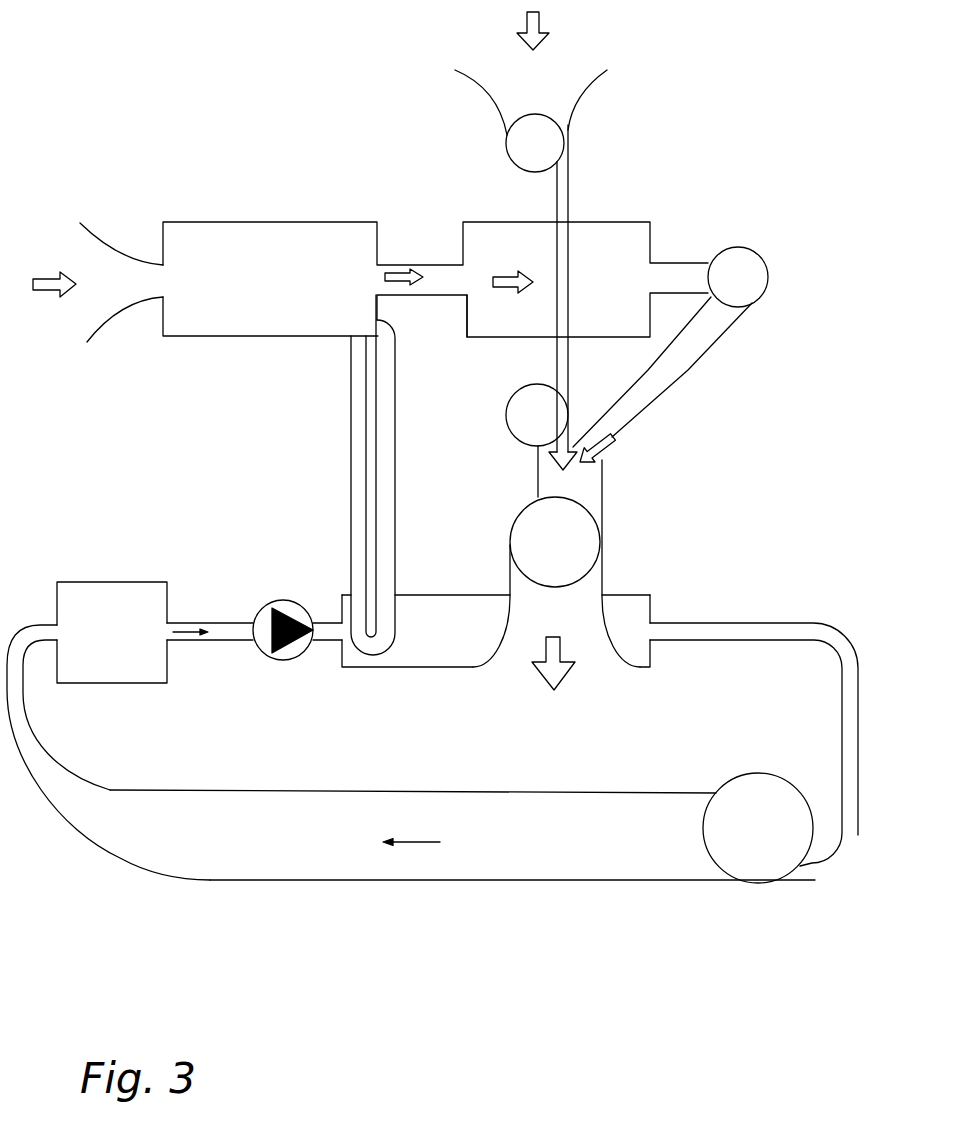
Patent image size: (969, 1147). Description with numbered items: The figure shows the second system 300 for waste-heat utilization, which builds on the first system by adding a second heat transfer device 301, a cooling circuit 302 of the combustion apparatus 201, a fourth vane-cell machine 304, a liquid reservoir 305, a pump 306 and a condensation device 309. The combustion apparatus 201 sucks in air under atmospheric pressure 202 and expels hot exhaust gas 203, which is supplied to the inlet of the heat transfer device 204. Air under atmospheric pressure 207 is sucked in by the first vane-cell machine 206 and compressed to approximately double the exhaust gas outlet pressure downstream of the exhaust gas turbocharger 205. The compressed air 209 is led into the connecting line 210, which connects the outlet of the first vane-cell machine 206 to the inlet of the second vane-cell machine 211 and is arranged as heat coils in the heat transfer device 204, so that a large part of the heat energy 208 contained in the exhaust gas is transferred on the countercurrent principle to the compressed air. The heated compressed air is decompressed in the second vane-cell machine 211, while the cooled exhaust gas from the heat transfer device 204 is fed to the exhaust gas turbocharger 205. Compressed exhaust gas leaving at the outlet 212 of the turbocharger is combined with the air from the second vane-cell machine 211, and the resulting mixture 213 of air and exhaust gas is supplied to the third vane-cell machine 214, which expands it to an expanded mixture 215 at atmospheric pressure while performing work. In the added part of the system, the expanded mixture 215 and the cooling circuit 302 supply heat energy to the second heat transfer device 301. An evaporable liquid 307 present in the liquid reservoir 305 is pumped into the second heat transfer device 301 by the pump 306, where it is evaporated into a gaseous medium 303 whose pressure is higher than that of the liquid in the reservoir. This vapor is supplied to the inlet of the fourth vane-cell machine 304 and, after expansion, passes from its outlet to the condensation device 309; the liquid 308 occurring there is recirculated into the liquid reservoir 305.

The second system for waste-heat utilization 300 is at (312, 60).
The combustion apparatus 201 is at (213, 340).
The air under atmospheric pressure 202 is at (112, 280).
The exhaust gas 203 is at (427, 272).
The heat transfer device 204 is at (466, 313).
The exhaust gas turbocharger 205 is at (722, 248).
The first vane-cell machine 206 is at (557, 114).
The air under atmospheric pressure 207 is at (510, 74).
The heat energy contained in the exhaust gas 208 is at (508, 276).
The compressed air 209 is at (563, 243).
The connecting line 210 is at (570, 285).
The second vane-cell machine 211 is at (505, 413).
The outlet of the exhaust gas turbocharger 212 is at (608, 445).
The mixture of air and exhaust gas 213 is at (556, 452).
The third vane-cell machine 214 is at (590, 510).
The expanded mixture of air and exhaust gas 215 is at (565, 653).
The second heat transfer device 301 is at (402, 668).
The cooling circuit 302 is at (362, 478).
The gaseous medium 303 is at (738, 630).
The fourth vane-cell machine 304 is at (762, 882).
The liquid reservoir 305 is at (115, 683).
The pump 306 is at (285, 660).
The liquid 307 is at (195, 640).
The liquid 308 is at (422, 845).
The condensation device 309 is at (590, 880).